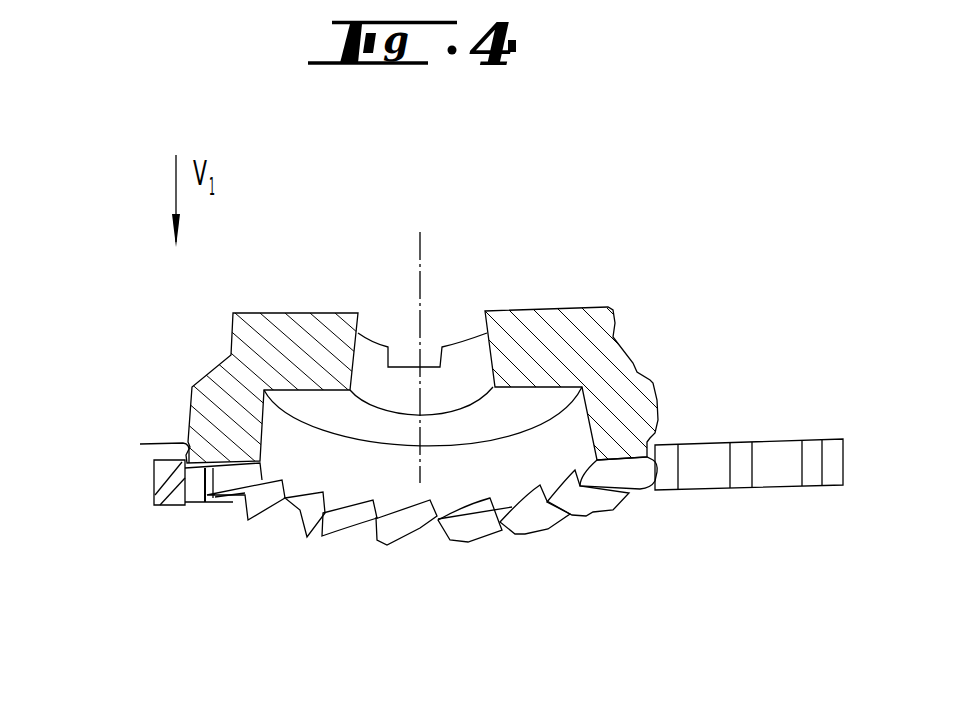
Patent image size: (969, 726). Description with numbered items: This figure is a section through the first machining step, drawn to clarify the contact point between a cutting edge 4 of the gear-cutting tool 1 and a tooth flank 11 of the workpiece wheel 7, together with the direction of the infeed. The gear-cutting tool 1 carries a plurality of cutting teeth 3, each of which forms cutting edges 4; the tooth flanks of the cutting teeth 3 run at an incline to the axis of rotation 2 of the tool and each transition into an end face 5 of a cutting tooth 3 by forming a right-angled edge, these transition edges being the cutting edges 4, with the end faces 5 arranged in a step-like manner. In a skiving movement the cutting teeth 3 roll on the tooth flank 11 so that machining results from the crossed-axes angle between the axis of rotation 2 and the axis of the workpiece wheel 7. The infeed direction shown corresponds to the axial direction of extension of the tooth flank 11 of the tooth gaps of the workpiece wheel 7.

The gear-cutting tool 1 is at (550, 303).
The axis of rotation 2 is at (420, 272).
The cutting teeth 3 is at (202, 433).
The cutting edge 4 is at (140, 444).
The end face 5 is at (400, 525).
The workpiece wheel 7 is at (718, 437).
The tooth flank 11 is at (192, 488).